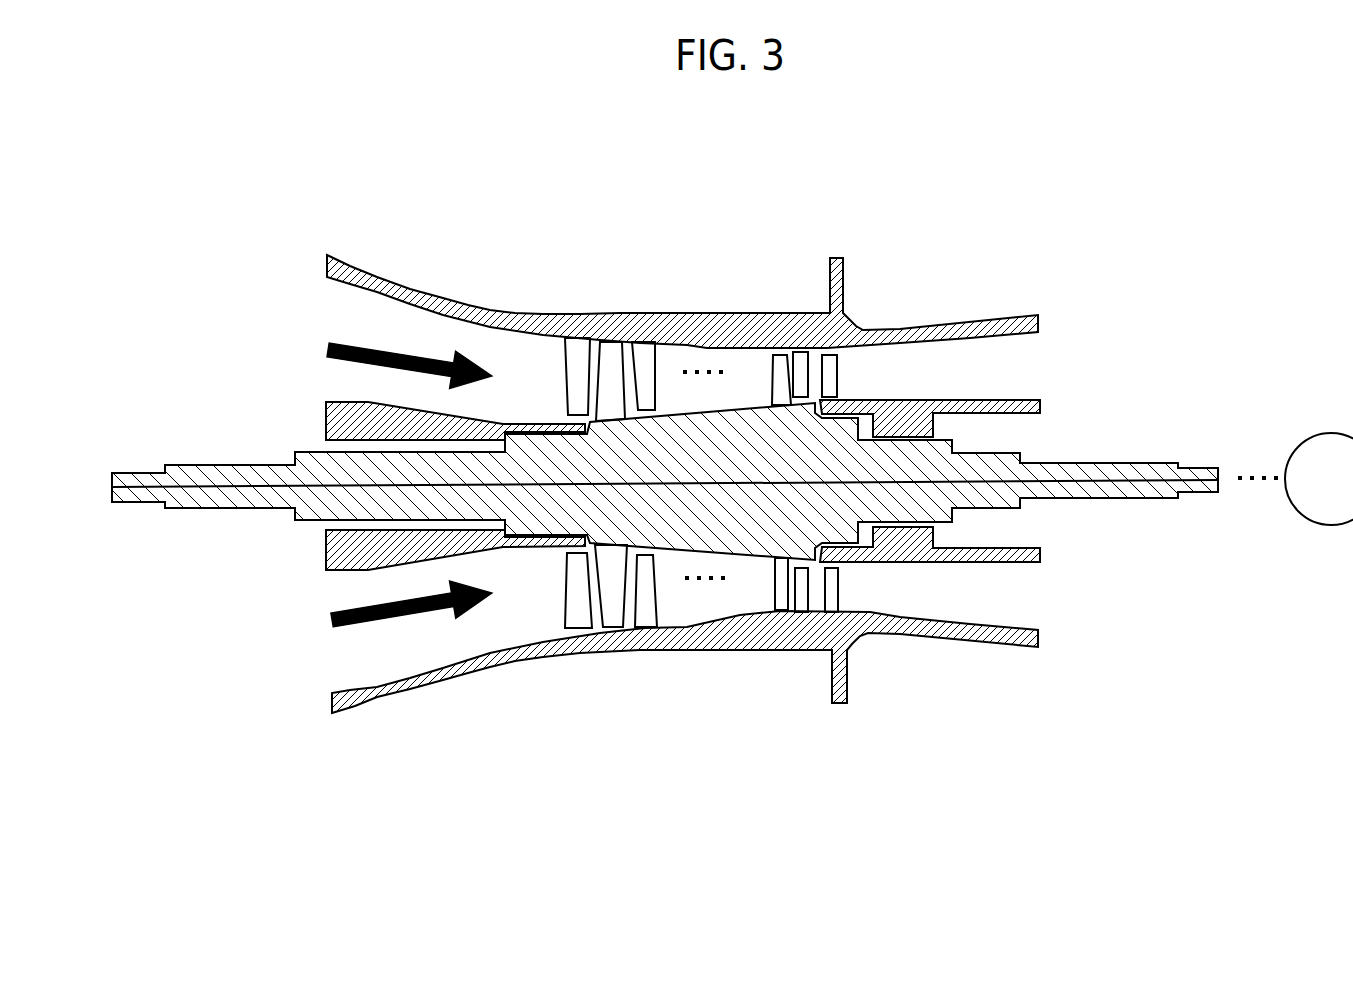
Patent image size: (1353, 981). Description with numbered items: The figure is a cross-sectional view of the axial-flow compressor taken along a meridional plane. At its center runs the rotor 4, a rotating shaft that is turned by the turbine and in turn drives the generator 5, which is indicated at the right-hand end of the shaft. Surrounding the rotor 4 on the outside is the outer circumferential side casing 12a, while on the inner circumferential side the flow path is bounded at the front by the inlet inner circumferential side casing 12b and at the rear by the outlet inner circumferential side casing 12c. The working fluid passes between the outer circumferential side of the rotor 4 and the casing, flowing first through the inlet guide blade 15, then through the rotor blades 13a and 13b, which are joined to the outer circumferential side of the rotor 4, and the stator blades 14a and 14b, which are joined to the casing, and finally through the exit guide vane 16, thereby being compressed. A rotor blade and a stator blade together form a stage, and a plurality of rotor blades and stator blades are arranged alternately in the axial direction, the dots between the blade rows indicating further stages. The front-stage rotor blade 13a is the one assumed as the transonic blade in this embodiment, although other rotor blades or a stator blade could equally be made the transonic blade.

The rotor 4 is at (194, 470).
The generator 5 is at (1319, 479).
The outer circumferential side casing 12a is at (350, 275).
The inlet inner circumferential side casing 12b is at (330, 423).
The outlet inner circumferential side casing 12c is at (1040, 403).
The rotor blade 13a is at (613, 350).
The rotor blade 13b is at (780, 365).
The stator blade 14a is at (643, 352).
The stator blade 14b is at (802, 365).
The inlet guide blade 15 is at (578, 345).
The exit guide vane 16 is at (833, 373).